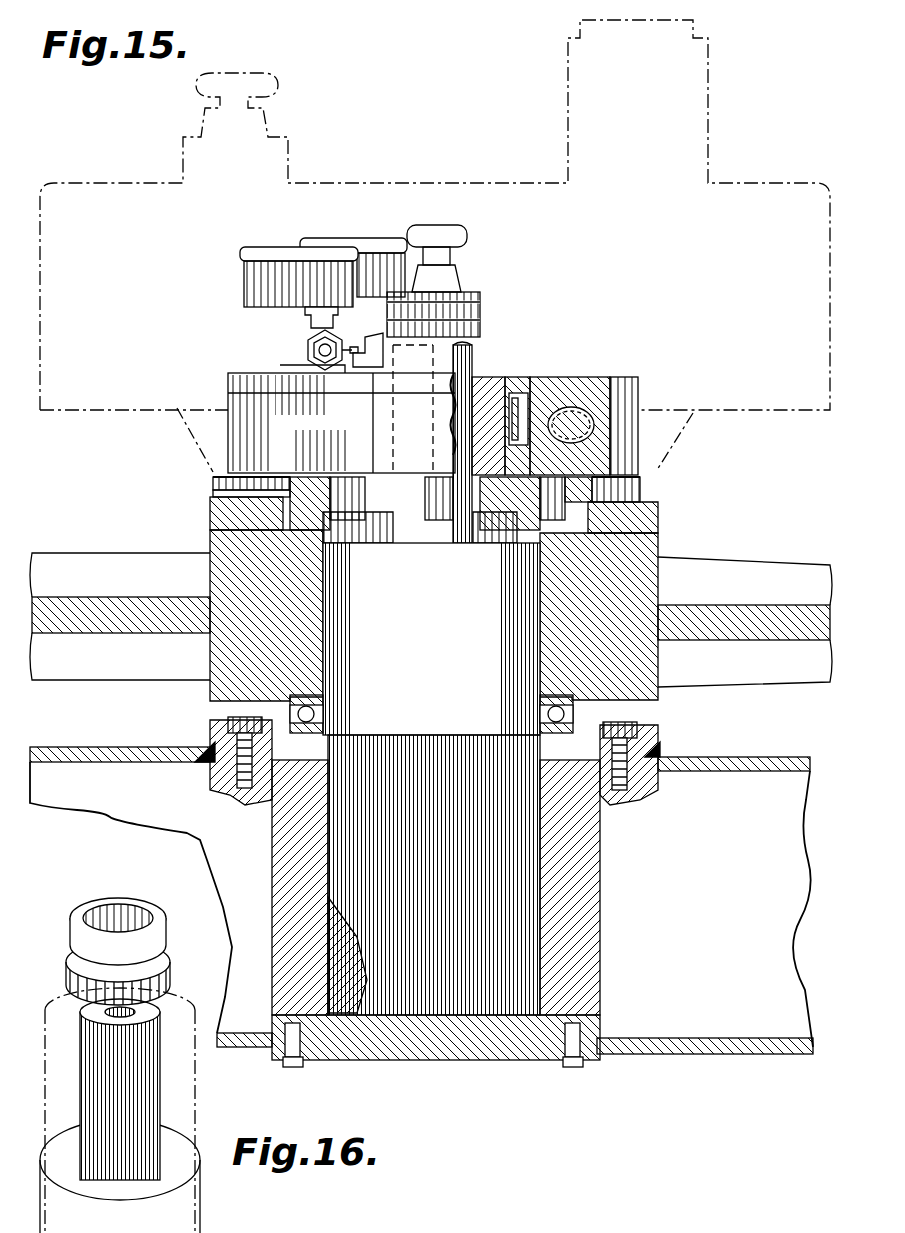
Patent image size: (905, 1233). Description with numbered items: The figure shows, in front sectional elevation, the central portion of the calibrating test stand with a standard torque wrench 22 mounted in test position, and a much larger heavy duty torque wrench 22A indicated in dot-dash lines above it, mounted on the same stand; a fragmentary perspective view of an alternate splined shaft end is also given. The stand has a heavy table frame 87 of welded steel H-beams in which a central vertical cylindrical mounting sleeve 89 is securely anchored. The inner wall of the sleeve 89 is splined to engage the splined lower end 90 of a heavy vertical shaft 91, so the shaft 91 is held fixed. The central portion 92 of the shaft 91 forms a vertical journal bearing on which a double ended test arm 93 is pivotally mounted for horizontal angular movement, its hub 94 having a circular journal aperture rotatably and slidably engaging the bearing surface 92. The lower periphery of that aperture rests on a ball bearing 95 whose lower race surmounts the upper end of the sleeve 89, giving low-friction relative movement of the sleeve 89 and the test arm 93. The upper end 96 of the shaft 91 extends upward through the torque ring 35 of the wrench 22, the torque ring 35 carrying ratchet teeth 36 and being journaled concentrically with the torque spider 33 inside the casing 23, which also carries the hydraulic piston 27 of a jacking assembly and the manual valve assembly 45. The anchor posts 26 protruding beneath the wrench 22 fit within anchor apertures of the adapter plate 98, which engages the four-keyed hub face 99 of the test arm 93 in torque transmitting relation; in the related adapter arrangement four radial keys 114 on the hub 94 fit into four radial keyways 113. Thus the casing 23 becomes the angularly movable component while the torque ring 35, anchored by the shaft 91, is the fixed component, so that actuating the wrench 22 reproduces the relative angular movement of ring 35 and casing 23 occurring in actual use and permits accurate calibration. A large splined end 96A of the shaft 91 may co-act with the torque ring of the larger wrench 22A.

In FIG. 15, the heavy duty torque wrench 22A is at (449, 181).
In FIG. 15, the manual valve assembly 45 is at (492, 300).
In FIG. 15, the casing 23 is at (236, 393).
In FIG. 15, the anchor posts 26 is at (305, 472).
In FIG. 15, the upper end of shaft 96 is at (472, 350).
In FIG. 16, the upper end of shaft 96 is at (158, 1090).
In FIG. 15, the torque wrench 22 is at (640, 377).
In FIG. 15, the hydraulic piston 27 is at (577, 413).
In FIG. 15, the torque spider 33 is at (521, 420).
In FIG. 15, the torque ring 35 is at (494, 377).
In FIG. 16, the torque ring 35 is at (86, 900).
In FIG. 16, the ratchet teeth 36 is at (172, 956).
In FIG. 15, the adapter plate 98 is at (213, 483).
In FIG. 15, the radial keys 114 is at (228, 493).
In FIG. 15, the four-keyed hub face 99 is at (218, 520).
In FIG. 15, the radial keyways 113 is at (214, 478).
In FIG. 15, the hub 94 is at (635, 557).
In FIG. 15, the test arm 93 is at (748, 587).
In FIG. 15, the central portion of shaft 92 is at (440, 664).
In FIG. 16, the central portion of shaft 92 is at (192, 1188).
In FIG. 15, the ball bearing 95 is at (297, 718).
In FIG. 15, the table frame 87 is at (246, 862).
In FIG. 15, the mounting sleeve 89 is at (592, 869).
In FIG. 15, the splined lower end 90 is at (500, 1000).
In FIG. 15, the shaft 91 is at (355, 1012).
In FIG. 16, the large splined end 96A is at (195, 1108).